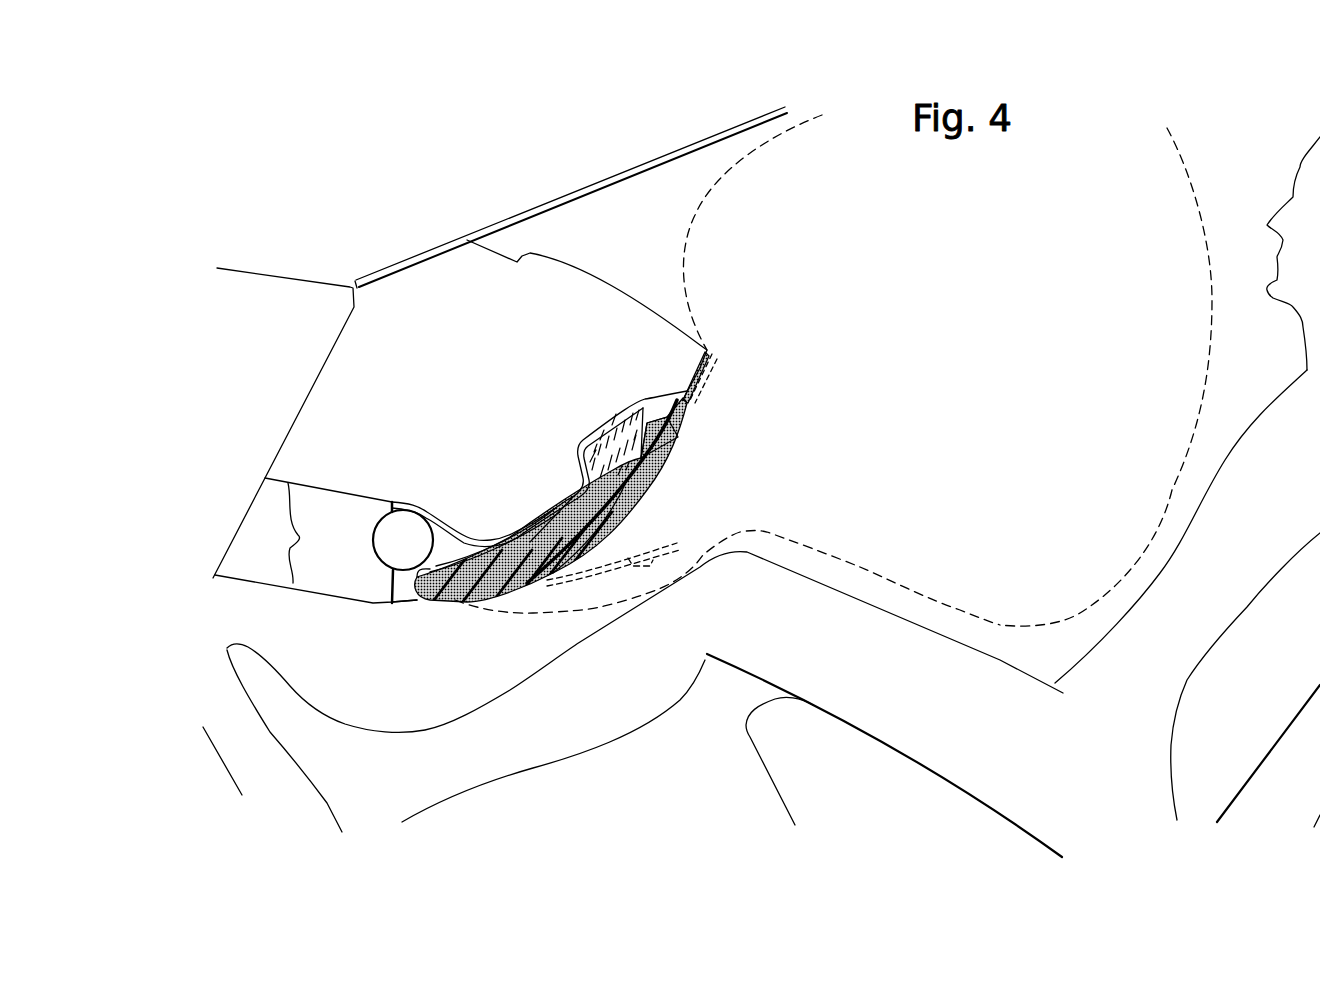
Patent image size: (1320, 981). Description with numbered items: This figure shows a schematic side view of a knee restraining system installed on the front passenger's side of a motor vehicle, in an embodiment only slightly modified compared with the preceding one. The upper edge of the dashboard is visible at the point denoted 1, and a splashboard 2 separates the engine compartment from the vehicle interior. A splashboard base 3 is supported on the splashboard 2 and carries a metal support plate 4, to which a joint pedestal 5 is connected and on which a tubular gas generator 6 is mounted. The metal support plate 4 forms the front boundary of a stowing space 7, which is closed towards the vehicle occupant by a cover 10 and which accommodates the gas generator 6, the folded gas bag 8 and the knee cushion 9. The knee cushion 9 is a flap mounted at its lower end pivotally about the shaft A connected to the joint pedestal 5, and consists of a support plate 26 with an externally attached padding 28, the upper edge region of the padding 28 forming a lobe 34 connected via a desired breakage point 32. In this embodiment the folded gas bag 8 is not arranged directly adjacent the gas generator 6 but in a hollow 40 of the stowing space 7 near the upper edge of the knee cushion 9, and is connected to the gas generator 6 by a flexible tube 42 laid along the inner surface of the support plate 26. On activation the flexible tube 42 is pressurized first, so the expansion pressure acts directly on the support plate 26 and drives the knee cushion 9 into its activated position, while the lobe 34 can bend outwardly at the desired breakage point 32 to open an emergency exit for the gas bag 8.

The upper edge of the dashboard 1 is at (708, 350).
The splashboard 2 is at (309, 386).
The splashboard base 3 is at (316, 540).
The metal support plate 4 is at (373, 532).
The joint pedestal 5 is at (400, 607).
The tubular gas generator 6 is at (387, 562).
The stowing space 7 is at (553, 507).
The folded gas bag 8 is at (682, 243).
The knee cushion 9 is at (510, 593).
The cover 10 is at (688, 403).
The support plate 26 is at (540, 530).
The padding 28 is at (627, 567).
The desired breakage point 32 is at (655, 463).
The lobe 34 is at (673, 432).
The hollow 40 is at (622, 413).
The flexible tube 42 is at (493, 545).
The shaft A is at (463, 600).